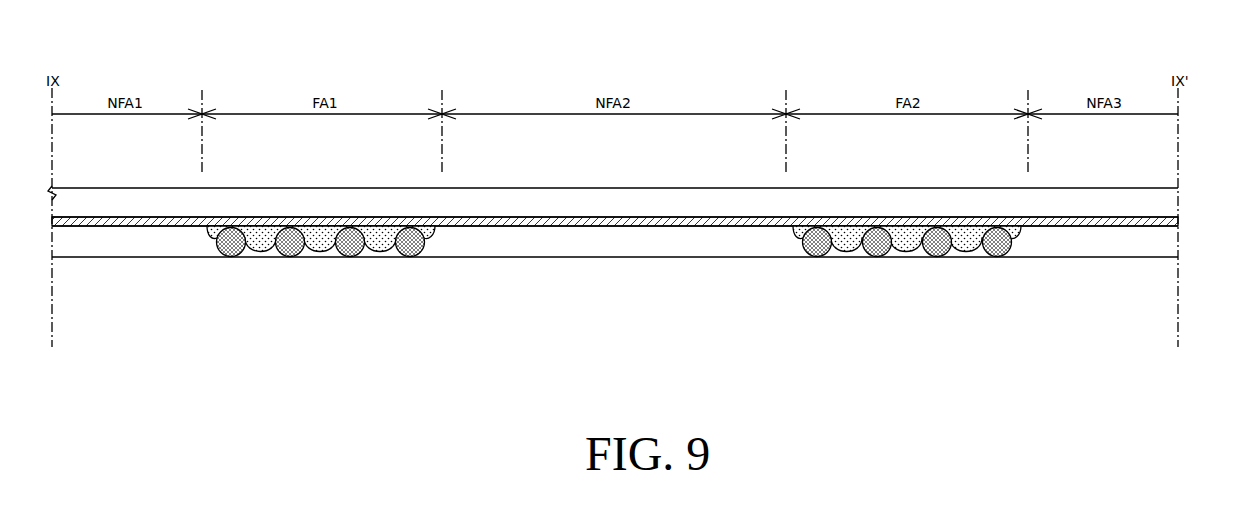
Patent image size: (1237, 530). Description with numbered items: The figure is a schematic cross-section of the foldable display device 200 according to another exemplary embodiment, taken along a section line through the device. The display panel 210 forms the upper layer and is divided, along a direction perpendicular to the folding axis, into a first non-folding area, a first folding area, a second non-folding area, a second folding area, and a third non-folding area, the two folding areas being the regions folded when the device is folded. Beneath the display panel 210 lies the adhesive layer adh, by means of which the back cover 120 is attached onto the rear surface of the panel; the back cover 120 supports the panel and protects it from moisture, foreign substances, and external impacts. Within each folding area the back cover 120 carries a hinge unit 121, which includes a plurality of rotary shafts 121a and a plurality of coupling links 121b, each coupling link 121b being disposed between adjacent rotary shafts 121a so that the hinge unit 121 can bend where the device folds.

The foldable display device 200 is at (1173, 23).
The display panel 210 is at (1163, 201).
The adhesive layer adh is at (1163, 223).
The back cover 120 is at (1161, 246).
The hinge unit 121 is at (222, 329).
The rotary shafts 121a is at (227, 248).
The coupling links 121b is at (262, 246).